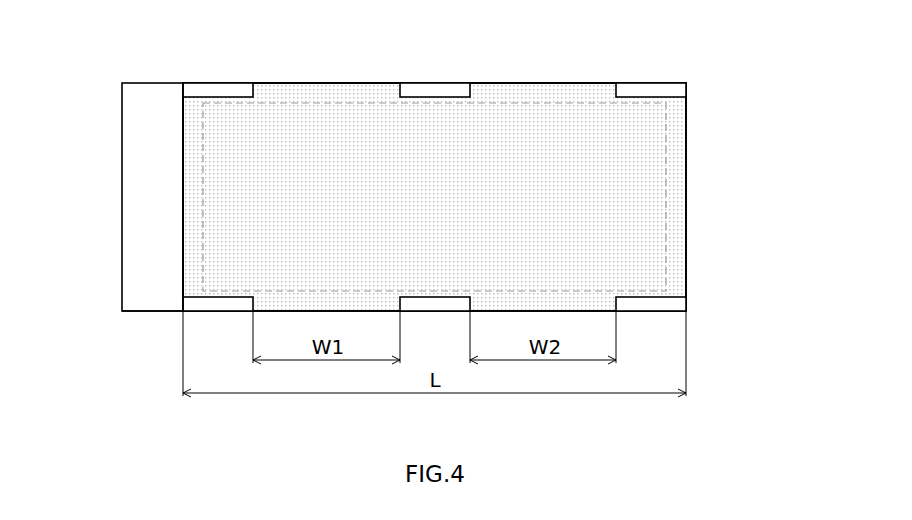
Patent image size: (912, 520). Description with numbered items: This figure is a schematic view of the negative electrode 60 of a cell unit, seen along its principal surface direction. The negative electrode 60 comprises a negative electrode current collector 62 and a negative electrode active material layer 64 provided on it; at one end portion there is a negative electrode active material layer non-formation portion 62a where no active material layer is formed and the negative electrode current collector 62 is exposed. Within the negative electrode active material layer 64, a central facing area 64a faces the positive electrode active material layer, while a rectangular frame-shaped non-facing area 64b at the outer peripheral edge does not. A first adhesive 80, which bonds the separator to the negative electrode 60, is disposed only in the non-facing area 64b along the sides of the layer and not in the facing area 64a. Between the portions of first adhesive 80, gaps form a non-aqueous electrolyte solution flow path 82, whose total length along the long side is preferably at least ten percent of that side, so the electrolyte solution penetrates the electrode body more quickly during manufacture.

The negative electrode 60 is at (686, 250).
The negative electrode current collector 62 is at (122, 193).
The negative electrode active material layer non-formation portion 62a is at (155, 305).
The negative electrode active material layer 64 is at (686, 140).
The facing area 64a is at (368, 108).
The non-facing area 64b is at (503, 83).
The first adhesive 80 is at (213, 88).
The non-aqueous electrolyte solution flow path 82 is at (183, 120).